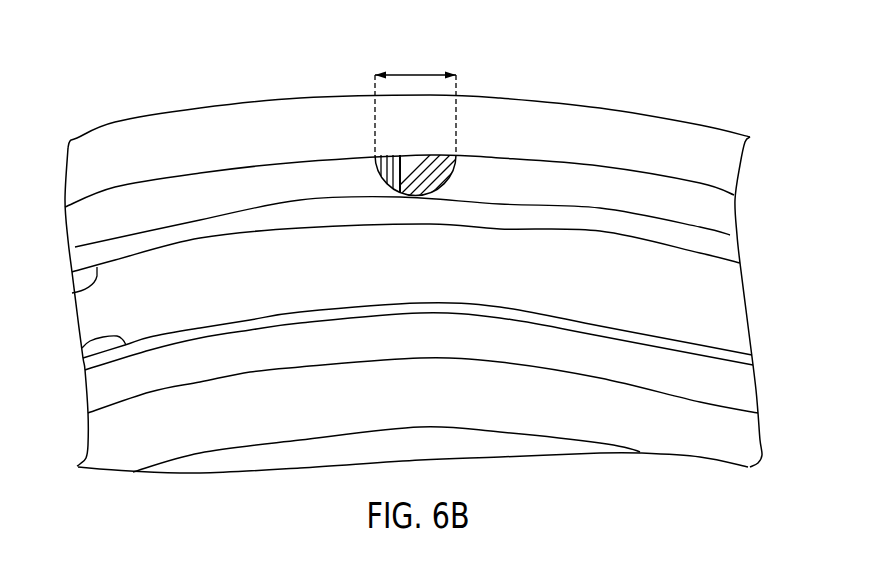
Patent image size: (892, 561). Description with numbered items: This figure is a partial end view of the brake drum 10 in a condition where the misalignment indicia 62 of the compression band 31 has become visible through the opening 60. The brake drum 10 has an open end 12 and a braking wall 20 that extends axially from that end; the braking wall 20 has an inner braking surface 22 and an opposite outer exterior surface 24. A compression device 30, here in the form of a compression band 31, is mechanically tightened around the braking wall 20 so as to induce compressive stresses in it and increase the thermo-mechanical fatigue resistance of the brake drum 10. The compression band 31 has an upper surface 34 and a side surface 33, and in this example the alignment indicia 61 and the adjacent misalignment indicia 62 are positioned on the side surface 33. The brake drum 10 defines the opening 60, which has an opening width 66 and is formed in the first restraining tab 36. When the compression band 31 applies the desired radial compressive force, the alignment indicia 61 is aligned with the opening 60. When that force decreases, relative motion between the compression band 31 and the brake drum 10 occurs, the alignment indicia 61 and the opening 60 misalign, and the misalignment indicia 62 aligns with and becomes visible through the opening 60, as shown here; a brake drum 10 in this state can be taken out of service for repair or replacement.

The brake drum 10 is at (692, 60).
The open end 12 is at (112, 119).
The braking wall 20 is at (88, 313).
The braking surface 22 is at (82, 348).
The exterior surface 24 is at (72, 293).
The compression device 30 is at (505, 112).
The compression band 31 is at (197, 125).
The side surface 33 is at (572, 123).
The upper surface 34 is at (255, 104).
The first restraining tab 36 is at (718, 215).
The opening 60 is at (412, 187).
The alignment indicia 61 is at (442, 175).
The misalignment indicia 62 is at (390, 180).
The opening width 66 is at (420, 73).